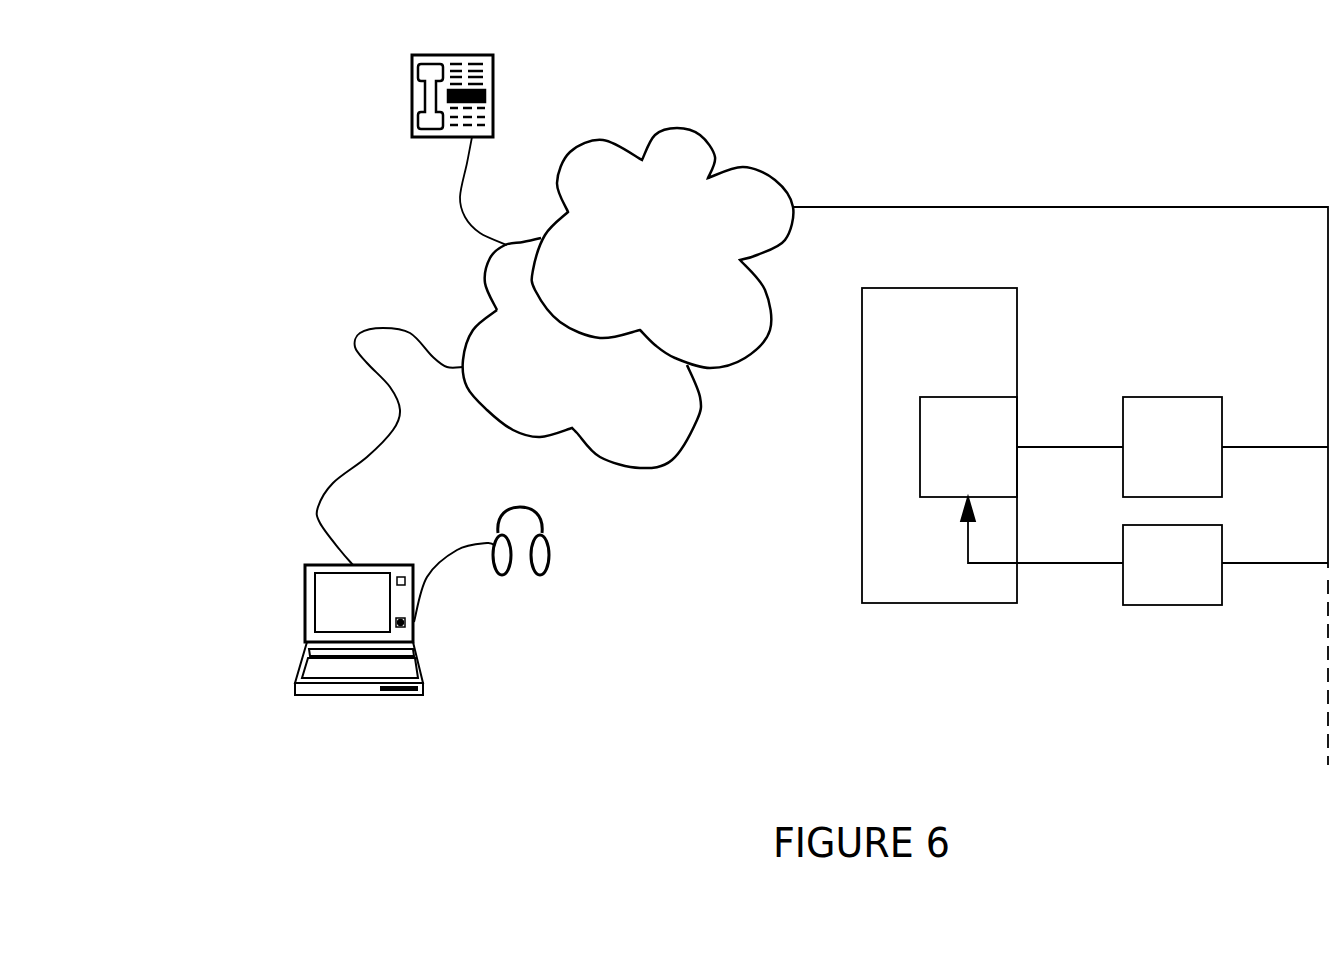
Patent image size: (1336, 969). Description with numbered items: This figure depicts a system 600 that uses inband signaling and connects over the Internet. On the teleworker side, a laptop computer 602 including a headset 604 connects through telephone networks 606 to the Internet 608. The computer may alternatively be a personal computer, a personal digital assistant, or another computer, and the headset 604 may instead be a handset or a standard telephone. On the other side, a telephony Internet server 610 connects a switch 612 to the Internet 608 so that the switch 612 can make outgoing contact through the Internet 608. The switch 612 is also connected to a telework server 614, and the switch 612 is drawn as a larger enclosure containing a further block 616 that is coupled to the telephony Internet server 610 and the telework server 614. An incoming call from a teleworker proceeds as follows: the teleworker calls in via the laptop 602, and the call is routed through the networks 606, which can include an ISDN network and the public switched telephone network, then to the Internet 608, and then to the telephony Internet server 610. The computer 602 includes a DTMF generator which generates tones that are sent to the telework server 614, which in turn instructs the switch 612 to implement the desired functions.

The system 600 is at (818, 655).
The laptop computer 602 is at (303, 633).
The headset 604 is at (550, 548).
The telephone networks 606 is at (592, 380).
The Internet 608 is at (659, 252).
The telephony Internet server 610 is at (1191, 575).
The switch 612 is at (927, 355).
The telework server 614 is at (495, 93).
The switch module 616 is at (987, 459).